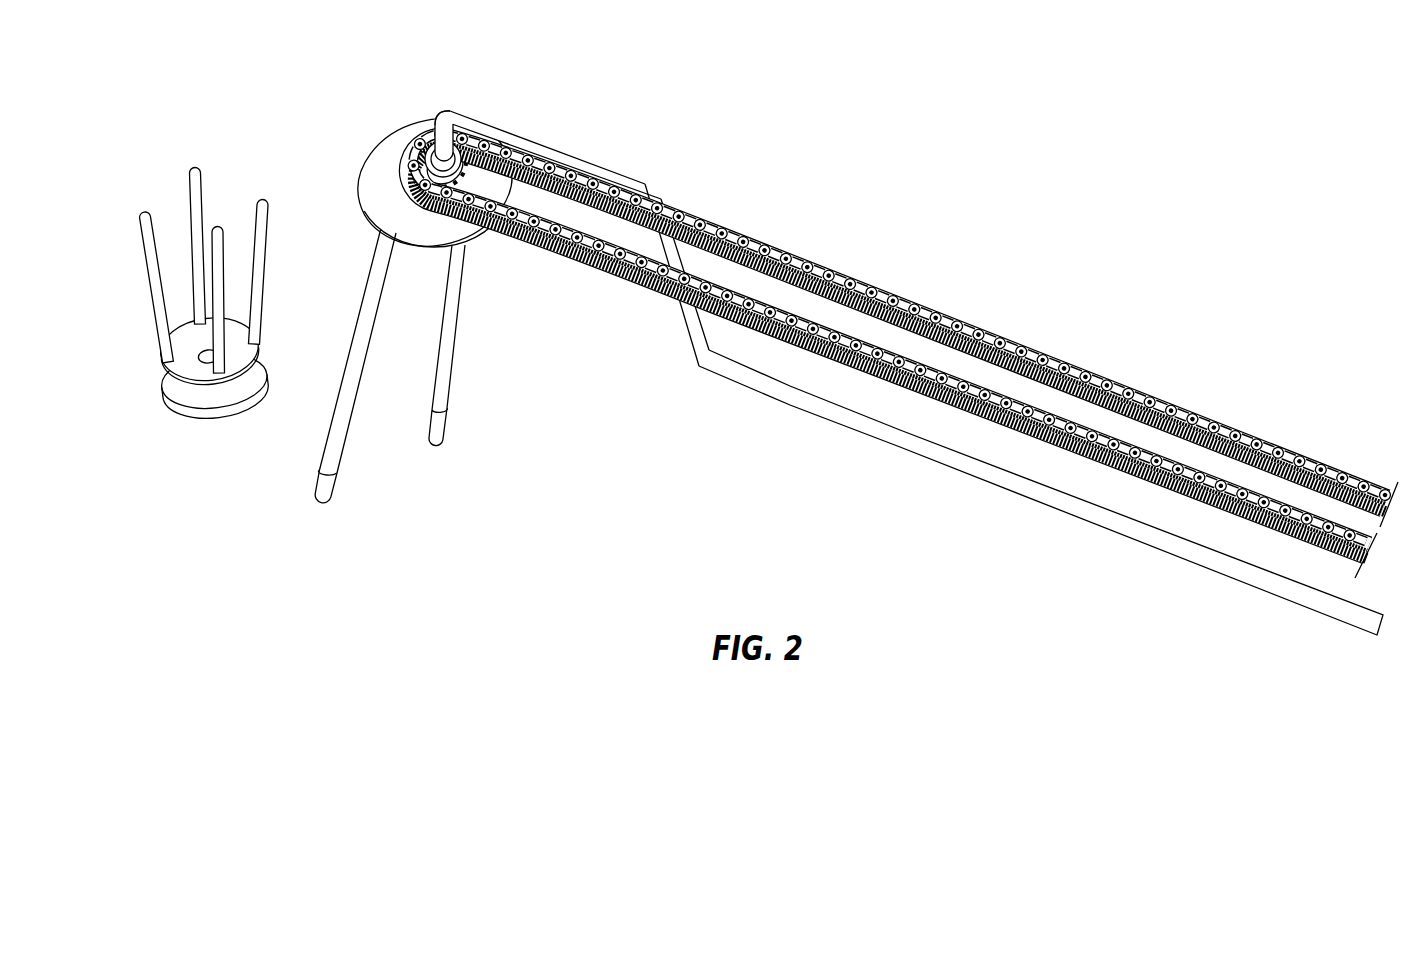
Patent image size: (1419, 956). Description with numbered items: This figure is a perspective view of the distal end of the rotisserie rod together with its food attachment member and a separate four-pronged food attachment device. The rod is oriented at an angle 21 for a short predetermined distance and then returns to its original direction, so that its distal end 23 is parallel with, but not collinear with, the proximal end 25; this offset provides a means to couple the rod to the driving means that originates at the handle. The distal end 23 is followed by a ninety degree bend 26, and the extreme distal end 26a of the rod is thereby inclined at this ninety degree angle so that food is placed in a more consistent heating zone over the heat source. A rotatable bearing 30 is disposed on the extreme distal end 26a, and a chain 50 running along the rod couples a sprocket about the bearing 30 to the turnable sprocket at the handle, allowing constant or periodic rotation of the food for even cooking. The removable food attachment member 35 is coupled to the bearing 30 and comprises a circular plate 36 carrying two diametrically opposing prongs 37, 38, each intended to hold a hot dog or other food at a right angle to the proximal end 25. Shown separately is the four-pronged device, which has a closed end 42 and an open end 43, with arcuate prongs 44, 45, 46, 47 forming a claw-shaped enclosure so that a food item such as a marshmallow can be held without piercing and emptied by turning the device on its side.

The angle 21 is at (703, 365).
The distal end 23 is at (568, 152).
The proximal end 25 is at (997, 480).
The ninety degree bend 26 is at (447, 110).
The extreme distal end 26a is at (442, 126).
The bearing 30 is at (482, 136).
The food attachment member 35 is at (485, 476).
The circular plate 36 is at (373, 157).
The prong 37 is at (453, 337).
The prong 38 is at (353, 407).
The closed end 42 is at (185, 398).
The open end 43 is at (200, 227).
The prong 44 is at (140, 242).
The prong 45 is at (190, 173).
The prong 46 is at (270, 238).
The prong 47 is at (223, 281).
The chain 50 is at (1010, 340).